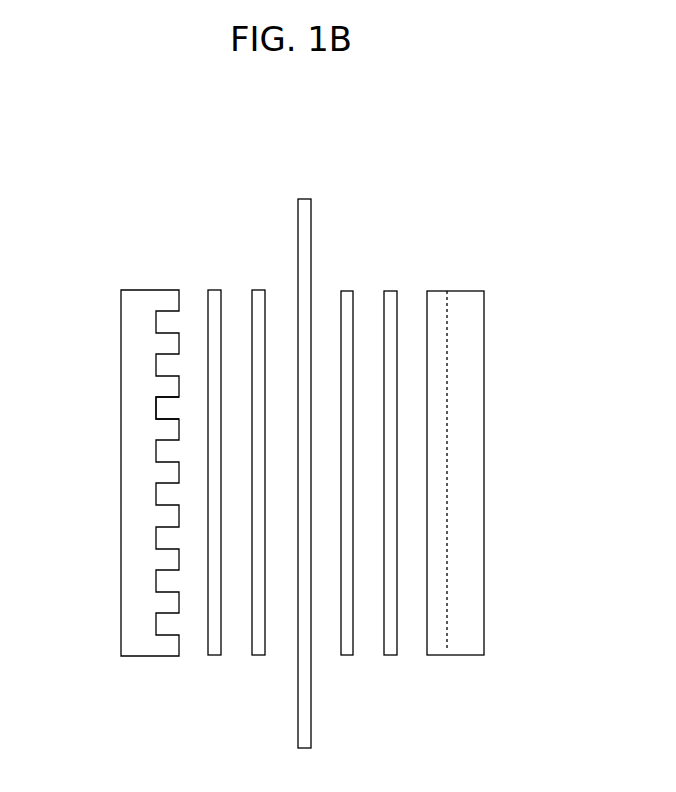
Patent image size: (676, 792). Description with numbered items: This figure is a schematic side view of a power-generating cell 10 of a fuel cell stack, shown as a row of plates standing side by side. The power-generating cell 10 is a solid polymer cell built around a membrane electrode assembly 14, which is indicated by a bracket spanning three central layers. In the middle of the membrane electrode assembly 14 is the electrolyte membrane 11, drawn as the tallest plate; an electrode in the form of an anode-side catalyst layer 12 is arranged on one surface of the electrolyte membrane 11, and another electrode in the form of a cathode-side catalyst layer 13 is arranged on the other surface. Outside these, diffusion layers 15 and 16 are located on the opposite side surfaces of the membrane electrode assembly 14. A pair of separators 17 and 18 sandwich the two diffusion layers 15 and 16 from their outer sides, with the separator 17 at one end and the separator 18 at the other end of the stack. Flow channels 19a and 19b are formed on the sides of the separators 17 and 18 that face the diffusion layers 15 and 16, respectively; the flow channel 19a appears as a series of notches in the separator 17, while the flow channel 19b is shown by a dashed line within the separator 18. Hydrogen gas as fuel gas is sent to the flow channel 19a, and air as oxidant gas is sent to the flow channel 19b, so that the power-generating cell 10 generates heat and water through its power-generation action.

The power-generating cell 10 is at (505, 228).
The electrolyte membrane 11 is at (303, 217).
The anode-side catalyst layer 12 is at (261, 290).
The cathode-side catalyst layer 13 is at (347, 290).
The membrane electrode assembly 14 is at (263, 158).
The diffusion layer 15 is at (215, 655).
The diffusion layer 16 is at (390, 657).
The separator 17 is at (132, 523).
The separator 18 is at (463, 640).
The flow channel 19a is at (167, 398).
The flow channel 19b is at (447, 462).